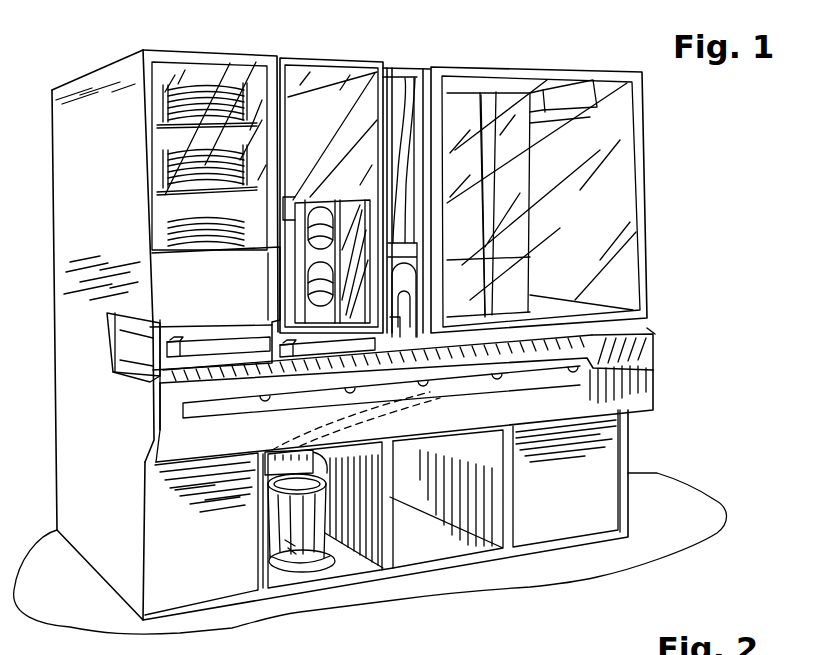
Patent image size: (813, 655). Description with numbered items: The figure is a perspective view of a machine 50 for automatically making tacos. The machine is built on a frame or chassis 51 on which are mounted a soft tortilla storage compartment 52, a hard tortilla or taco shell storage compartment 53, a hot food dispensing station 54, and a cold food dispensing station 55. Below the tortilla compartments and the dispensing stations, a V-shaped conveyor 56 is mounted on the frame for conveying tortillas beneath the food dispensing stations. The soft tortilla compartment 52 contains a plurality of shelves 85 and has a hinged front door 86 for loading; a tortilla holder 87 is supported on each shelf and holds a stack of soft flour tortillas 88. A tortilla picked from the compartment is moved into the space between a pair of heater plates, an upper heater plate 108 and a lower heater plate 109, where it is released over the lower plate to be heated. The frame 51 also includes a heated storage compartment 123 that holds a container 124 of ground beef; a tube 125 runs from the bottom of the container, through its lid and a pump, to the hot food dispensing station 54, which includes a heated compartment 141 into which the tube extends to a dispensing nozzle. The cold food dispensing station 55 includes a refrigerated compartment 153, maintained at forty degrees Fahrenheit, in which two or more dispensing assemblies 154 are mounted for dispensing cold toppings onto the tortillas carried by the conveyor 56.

The machine 50 is at (672, 221).
The frame or chassis 51 is at (77, 333).
The soft tortilla storage compartment 52 is at (190, 72).
The hard tortilla or taco shell storage compartment 53 is at (331, 183).
The hot food dispensing station 54 is at (400, 77).
The cold food dispensing station 55 is at (487, 80).
The V-shaped conveyor 56 is at (147, 462).
The shelves 85 is at (167, 135).
The hinged front door 86 is at (148, 252).
The tortilla holder 87 is at (262, 72).
The soft flour tortillas 88 is at (153, 173).
The upper heater plate 108 is at (130, 330).
The lower heater plate 109 is at (137, 353).
The heated storage compartment 123 is at (345, 565).
The container 124 is at (283, 528).
The tube 125 is at (310, 470).
The heated compartment 141 is at (414, 78).
The refrigerated compartment 153 is at (613, 127).
The dispensing assemblies 154 is at (520, 237).